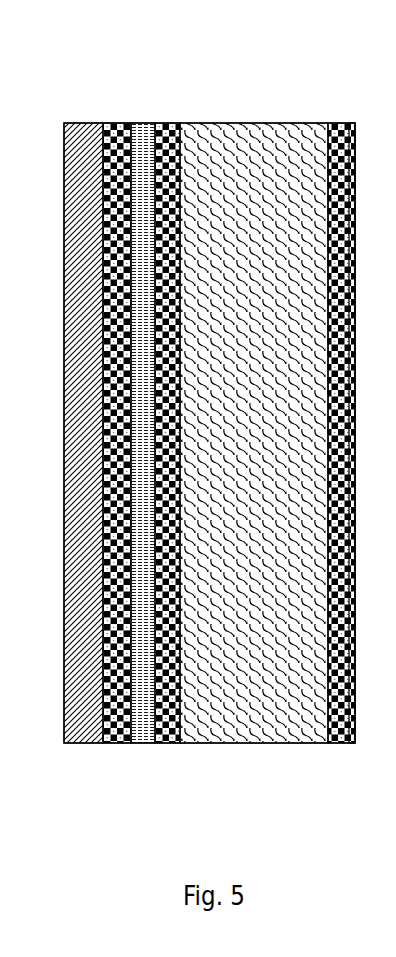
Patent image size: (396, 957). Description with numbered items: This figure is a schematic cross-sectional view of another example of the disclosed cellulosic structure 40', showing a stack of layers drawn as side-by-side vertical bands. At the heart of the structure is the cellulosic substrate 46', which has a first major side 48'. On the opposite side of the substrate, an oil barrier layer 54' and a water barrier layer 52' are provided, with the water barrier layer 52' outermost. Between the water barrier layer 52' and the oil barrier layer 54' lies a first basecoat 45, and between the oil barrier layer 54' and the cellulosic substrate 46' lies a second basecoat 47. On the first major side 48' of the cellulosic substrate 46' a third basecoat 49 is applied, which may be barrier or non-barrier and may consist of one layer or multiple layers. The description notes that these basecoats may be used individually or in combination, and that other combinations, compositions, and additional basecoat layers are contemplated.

The cellulosic structure 40' is at (209, 377).
The water barrier layer 52' is at (73, 477).
The basecoat 45 is at (115, 743).
The oil barrier layer 54' is at (132, 477).
The basecoat 47 is at (168, 743).
The cellulosic substrate 46' is at (254, 473).
The first major side 48' is at (311, 491).
The basecoat 49 is at (347, 743).